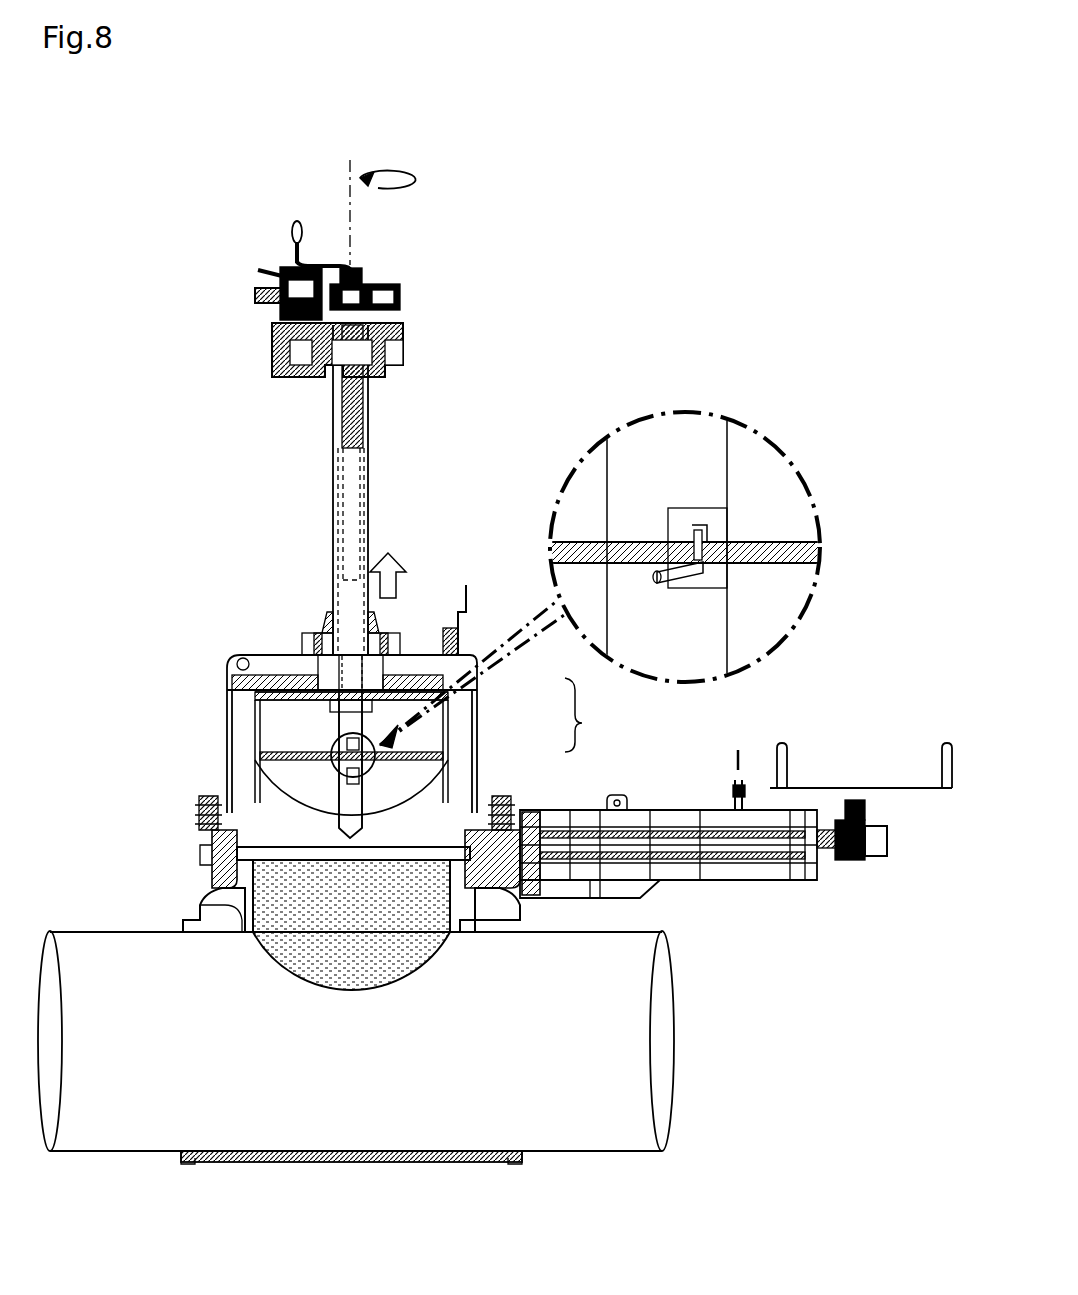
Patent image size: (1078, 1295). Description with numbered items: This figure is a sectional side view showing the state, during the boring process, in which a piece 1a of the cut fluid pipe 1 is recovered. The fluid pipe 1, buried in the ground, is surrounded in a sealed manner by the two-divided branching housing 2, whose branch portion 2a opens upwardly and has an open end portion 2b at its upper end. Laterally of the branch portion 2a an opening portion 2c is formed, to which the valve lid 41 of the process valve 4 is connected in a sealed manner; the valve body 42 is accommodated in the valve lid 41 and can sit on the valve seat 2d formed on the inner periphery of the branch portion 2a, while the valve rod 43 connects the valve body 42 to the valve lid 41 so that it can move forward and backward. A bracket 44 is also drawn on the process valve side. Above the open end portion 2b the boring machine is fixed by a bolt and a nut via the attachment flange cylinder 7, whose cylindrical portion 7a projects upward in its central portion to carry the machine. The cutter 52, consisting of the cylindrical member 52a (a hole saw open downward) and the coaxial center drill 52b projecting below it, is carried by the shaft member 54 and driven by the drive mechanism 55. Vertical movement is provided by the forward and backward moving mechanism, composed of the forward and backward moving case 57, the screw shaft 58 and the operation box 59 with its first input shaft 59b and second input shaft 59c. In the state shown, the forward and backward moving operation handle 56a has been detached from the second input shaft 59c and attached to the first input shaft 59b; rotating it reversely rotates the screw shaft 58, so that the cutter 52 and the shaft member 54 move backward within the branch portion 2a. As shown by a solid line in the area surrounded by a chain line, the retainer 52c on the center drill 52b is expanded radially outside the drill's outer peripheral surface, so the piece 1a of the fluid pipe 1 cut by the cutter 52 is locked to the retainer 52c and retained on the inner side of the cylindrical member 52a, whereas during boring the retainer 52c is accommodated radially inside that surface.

The fluid pipe 1 is at (655, 988).
The piece of the cut fluid pipe 1a is at (290, 775).
The branching housing 2 is at (347, 1166).
The branch portion 2a is at (208, 905).
The open end portion 2b is at (200, 814).
The opening portion 2c is at (532, 830).
The valve seat 2d is at (210, 838).
The process valve 4 is at (736, 815).
The attachment flange cylinder 7 is at (315, 711).
The cylindrical portion 7a is at (290, 667).
The valve lid 41 is at (752, 880).
The valve body 42 is at (355, 860).
The valve rod 43 is at (612, 800).
The support bracket 44 is at (778, 745).
The cutter 52 is at (602, 619).
The cylindrical member 52a is at (400, 745).
The center drill 52b is at (405, 750).
The retainer 52c is at (690, 580).
The shaft member 54 is at (348, 600).
The drive mechanism 55 is at (258, 332).
The forward and backward moving operation handle 56a is at (292, 245).
The forward and backward moving case 57 is at (417, 340).
The screw shaft 58 is at (360, 425).
The operation box 59 is at (363, 235).
The first input shaft 59b is at (362, 275).
The second input shaft 59c is at (400, 297).